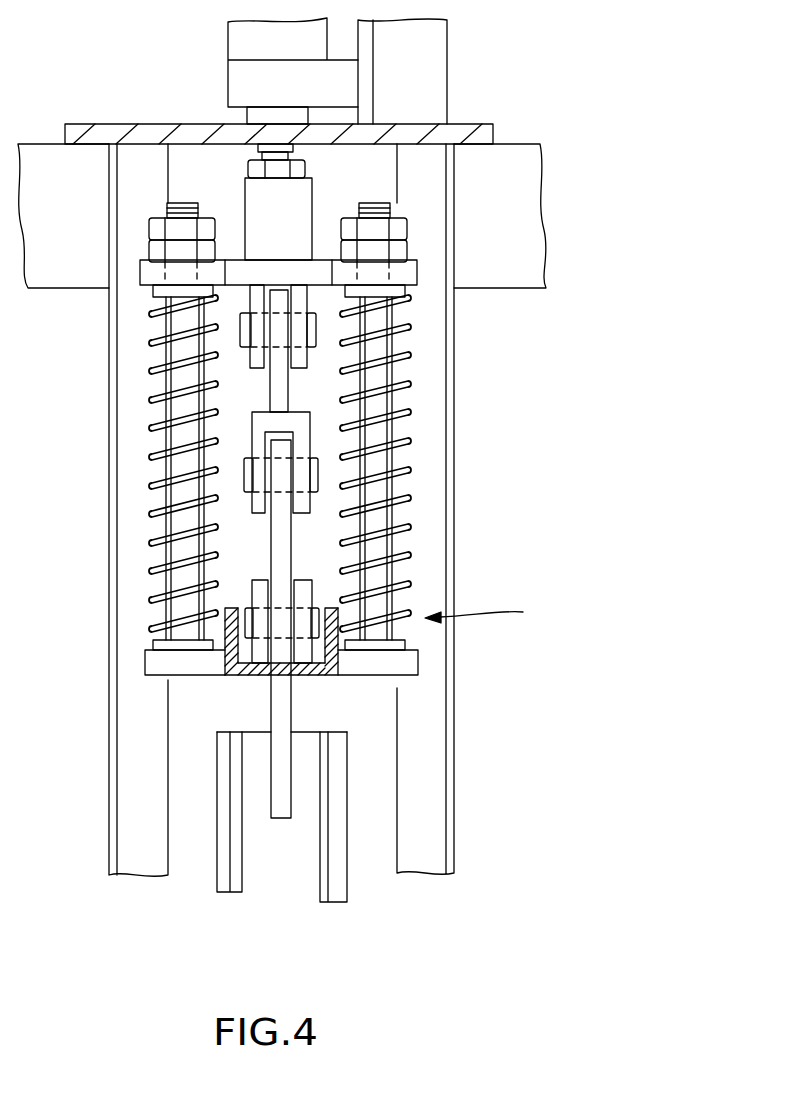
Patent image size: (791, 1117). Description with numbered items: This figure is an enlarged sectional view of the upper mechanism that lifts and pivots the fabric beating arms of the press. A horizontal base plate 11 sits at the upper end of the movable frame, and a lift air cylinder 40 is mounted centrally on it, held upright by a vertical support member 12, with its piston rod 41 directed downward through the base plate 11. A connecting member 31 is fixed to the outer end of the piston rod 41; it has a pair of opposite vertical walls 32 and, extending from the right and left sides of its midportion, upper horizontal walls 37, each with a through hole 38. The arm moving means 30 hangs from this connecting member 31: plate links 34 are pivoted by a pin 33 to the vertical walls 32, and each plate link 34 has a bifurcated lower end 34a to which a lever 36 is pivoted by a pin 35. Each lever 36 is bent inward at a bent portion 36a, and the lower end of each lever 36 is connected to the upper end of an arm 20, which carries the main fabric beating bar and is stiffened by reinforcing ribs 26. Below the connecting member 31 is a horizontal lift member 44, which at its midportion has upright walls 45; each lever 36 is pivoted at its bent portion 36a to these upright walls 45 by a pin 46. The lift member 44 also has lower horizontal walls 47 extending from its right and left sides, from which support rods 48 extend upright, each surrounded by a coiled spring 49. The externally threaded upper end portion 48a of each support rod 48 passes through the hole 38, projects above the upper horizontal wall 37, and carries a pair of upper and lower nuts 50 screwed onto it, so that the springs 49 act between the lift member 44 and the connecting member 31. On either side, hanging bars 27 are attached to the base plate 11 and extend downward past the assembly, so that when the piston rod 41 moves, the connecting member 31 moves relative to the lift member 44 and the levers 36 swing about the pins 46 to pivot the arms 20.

The horizontal base plate 11 is at (140, 130).
The vertical support member 12 is at (437, 73).
The arm 20 is at (261, 848).
The reinforcing rib 26 is at (325, 887).
The hanging bar 27 is at (126, 795).
The arm moving means 30 is at (496, 619).
The connecting member 31 is at (258, 202).
The vertical wall 32 is at (303, 358).
The pin 33 is at (313, 322).
The plate link 34 is at (275, 388).
The bifurcated lower end 34a is at (250, 450).
The pin 35 is at (247, 477).
The lever 36 is at (280, 540).
The bent portion 36a is at (253, 600).
The upper horizontal wall 37 is at (145, 268).
The through hole 38 is at (140, 283).
The lift air cylinder 40 is at (238, 50).
The piston rod 41 is at (258, 148).
The lift member 44 is at (238, 673).
The upright wall 45 is at (307, 578).
The pin 46 is at (320, 603).
The lower horizontal wall 47 is at (152, 666).
The support rod 48 is at (397, 433).
The upper end portion 48a is at (180, 202).
The coiled spring 49 is at (395, 490).
The nut 50 is at (150, 250).